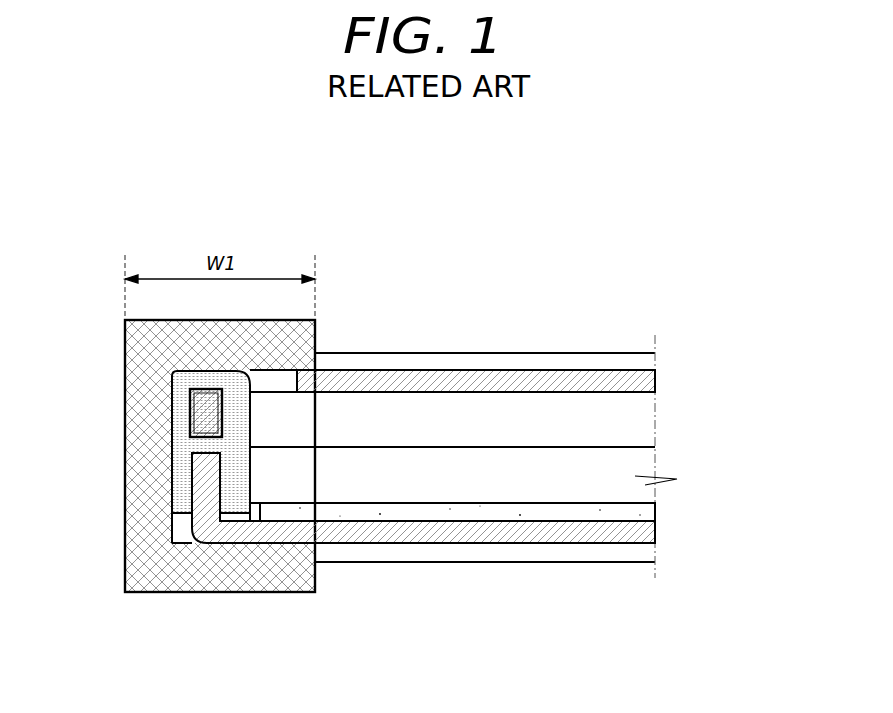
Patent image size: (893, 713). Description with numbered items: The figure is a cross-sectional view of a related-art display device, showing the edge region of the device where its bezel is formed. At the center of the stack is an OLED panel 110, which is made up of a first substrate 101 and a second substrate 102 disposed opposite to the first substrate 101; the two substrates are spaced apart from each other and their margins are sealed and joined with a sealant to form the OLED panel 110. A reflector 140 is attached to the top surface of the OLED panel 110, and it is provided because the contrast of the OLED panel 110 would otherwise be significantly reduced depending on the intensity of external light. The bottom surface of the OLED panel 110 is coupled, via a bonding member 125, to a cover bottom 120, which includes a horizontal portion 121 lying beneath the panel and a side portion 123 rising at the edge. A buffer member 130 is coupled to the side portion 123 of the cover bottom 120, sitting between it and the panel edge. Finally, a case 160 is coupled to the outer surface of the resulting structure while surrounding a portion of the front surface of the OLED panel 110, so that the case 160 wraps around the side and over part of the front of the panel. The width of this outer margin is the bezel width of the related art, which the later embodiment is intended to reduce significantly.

The OLED panel 110 is at (520, 456).
The first substrate 101 is at (640, 459).
The second substrate 102 is at (642, 423).
The reflector 140 is at (642, 381).
The bonding member 125 is at (642, 512).
The cover bottom 120 is at (77, 547).
The horizontal portion 121 is at (280, 532).
The side portion 123 is at (208, 473).
The buffer member 130 is at (180, 397).
The case 160 is at (268, 580).